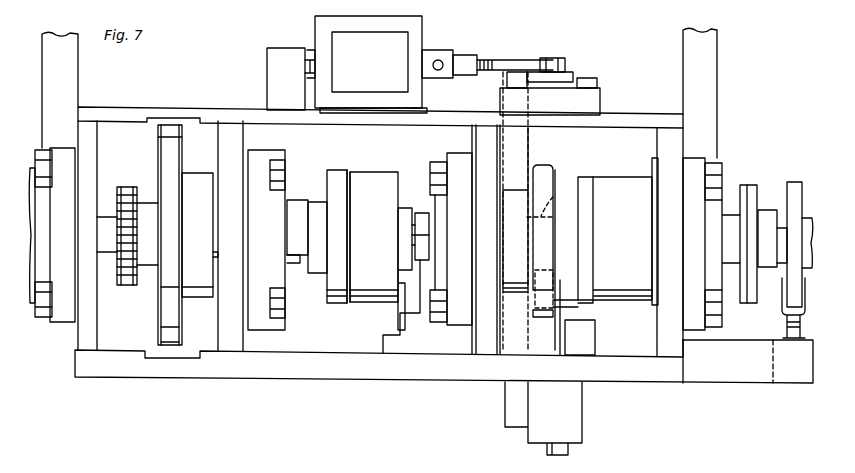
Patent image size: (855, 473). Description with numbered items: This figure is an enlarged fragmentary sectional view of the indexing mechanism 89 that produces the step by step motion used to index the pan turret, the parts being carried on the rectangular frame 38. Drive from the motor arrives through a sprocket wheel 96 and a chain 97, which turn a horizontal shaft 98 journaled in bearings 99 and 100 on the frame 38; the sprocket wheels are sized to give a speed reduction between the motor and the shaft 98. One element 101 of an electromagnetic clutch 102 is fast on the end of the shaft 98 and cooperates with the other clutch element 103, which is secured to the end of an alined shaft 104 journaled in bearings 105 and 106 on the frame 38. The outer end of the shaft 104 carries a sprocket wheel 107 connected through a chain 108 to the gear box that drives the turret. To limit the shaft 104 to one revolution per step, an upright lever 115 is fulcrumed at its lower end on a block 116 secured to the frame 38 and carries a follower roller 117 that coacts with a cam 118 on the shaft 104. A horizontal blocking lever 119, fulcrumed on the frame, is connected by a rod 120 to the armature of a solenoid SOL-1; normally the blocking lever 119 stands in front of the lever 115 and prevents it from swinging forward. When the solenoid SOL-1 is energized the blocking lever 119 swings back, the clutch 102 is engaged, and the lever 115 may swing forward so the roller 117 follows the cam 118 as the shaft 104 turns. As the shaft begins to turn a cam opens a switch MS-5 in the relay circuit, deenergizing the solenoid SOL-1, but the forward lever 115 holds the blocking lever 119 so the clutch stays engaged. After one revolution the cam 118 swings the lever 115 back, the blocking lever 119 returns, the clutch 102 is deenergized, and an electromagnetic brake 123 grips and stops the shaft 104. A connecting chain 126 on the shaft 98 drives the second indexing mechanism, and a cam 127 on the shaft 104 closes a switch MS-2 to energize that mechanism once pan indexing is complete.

The rectangular frame 38 is at (65, 75).
The indexing mechanism 89 is at (349, 369).
The sprocket wheel 96 is at (165, 301).
The chain 97 is at (161, 136).
The horizontal shaft 98 is at (306, 216).
The bearing 99 is at (62, 316).
The bearing 100 is at (286, 298).
The clutch element 101 is at (330, 172).
The electromagnetic clutch 102 is at (354, 163).
The clutch element 103 is at (409, 209).
The alined shaft 104 is at (413, 232).
The bearing 105 is at (452, 160).
The bearing 106 is at (700, 166).
The sprocket wheel 107 is at (757, 210).
The chain 108 is at (747, 185).
The upright lever 115 is at (519, 142).
The block 116 is at (579, 413).
The follower roller 117 is at (555, 201).
The cam 118 is at (554, 172).
The blocking lever 119 is at (566, 75).
The rod 120 is at (506, 60).
The electromagnetic brake 123 is at (621, 171).
The connecting chain 126 is at (128, 187).
The cam 127 is at (793, 298).
The switch MS-5 is at (601, 343).
The switch MS-2 is at (788, 393).
The solenoid SOL-1 is at (421, 36).